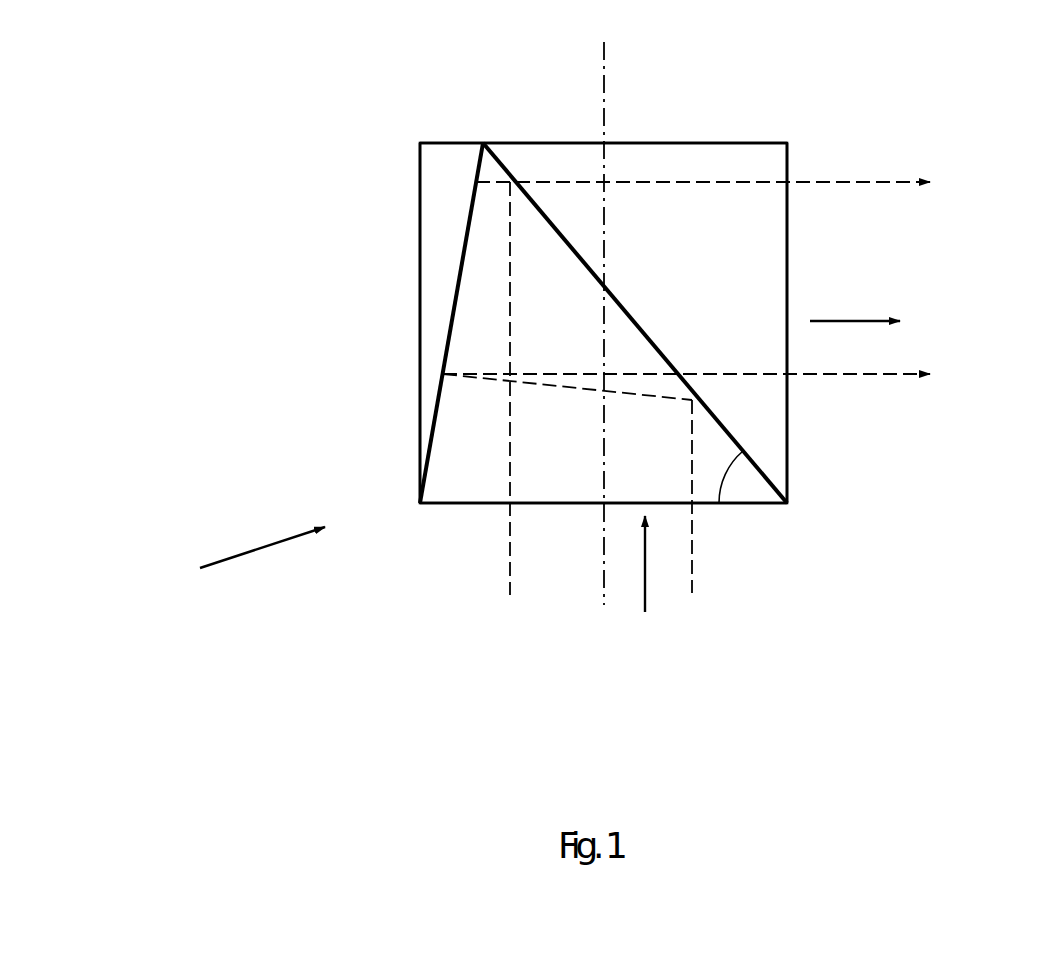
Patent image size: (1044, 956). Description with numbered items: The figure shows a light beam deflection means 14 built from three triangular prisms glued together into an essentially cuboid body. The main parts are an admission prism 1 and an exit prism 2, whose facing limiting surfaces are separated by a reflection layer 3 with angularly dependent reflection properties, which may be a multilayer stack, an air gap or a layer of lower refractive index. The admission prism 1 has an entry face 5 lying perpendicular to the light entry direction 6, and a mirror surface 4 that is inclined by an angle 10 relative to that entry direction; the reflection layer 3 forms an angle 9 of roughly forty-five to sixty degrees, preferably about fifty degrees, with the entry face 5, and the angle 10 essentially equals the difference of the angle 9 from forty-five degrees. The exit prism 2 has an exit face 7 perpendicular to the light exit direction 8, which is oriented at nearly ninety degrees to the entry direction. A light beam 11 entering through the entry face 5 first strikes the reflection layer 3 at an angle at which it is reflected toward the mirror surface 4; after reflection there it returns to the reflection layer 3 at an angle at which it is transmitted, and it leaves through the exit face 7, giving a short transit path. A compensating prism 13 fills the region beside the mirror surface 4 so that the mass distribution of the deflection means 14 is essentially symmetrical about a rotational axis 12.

The admission prism 1 is at (452, 505).
The exit prism 2 is at (772, 160).
The reflection layer 3 is at (605, 292).
The mirror surface 4 is at (470, 203).
The entry face 5 is at (570, 505).
The light entry direction 6 is at (642, 570).
The exit face 7 is at (788, 220).
The light exit direction 8 is at (855, 323).
The angle 9 is at (758, 492).
The angle 10 is at (425, 430).
The light beam 11 is at (507, 543).
The rotational axis 12 is at (608, 63).
The compensating prism 13 is at (443, 163).
The light beam deflection means 14 is at (241, 560).